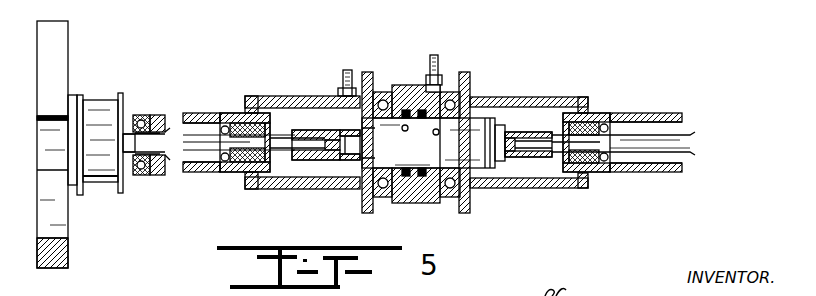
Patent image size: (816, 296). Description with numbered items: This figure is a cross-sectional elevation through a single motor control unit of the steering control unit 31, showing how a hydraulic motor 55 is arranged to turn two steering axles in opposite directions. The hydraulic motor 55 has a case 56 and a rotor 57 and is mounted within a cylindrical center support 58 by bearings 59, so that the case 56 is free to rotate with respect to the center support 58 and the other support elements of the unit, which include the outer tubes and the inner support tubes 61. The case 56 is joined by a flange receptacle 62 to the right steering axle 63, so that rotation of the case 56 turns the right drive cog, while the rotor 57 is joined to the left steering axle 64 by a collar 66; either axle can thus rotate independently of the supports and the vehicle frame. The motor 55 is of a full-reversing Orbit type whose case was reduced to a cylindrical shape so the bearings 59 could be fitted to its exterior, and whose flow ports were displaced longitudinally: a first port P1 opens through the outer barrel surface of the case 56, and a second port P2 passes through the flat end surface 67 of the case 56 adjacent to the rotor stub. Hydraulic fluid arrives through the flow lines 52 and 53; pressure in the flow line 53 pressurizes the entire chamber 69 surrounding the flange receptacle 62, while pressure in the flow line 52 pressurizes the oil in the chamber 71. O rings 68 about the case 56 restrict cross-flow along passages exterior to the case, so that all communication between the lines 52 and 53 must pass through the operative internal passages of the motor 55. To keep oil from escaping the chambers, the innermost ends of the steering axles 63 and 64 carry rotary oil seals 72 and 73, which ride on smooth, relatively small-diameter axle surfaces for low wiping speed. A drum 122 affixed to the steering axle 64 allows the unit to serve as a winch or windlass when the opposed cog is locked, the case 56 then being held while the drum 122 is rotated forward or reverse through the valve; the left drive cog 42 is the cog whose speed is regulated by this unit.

The left drive cog 42 is at (68, 50).
The drum 122 is at (106, 172).
The steering axle 64 is at (127, 134).
The bearings 59 is at (184, 113).
The rotary oil seal 73 is at (243, 165).
The inner support tubes 61 is at (262, 97).
The chamber 71 is at (290, 178).
The chamber 69 is at (548, 175).
The rotor 57 is at (345, 152).
The collar 66 is at (302, 136).
The second port P2 is at (358, 129).
The flow line 52 is at (340, 72).
The flow line 53 is at (440, 58).
The flat end surface 67 is at (362, 178).
The cylindrical center support 58 is at (412, 203).
The O rings 68 is at (421, 110).
The case 56 is at (519, 94).
The first port P1 is at (433, 135).
The steering control unit 31 is at (483, 96).
The hydraulic motor 55 is at (478, 168).
The flange receptacle 62 is at (518, 133).
The rotary oil seal 72 is at (595, 168).
The right steering axle 63 is at (690, 135).